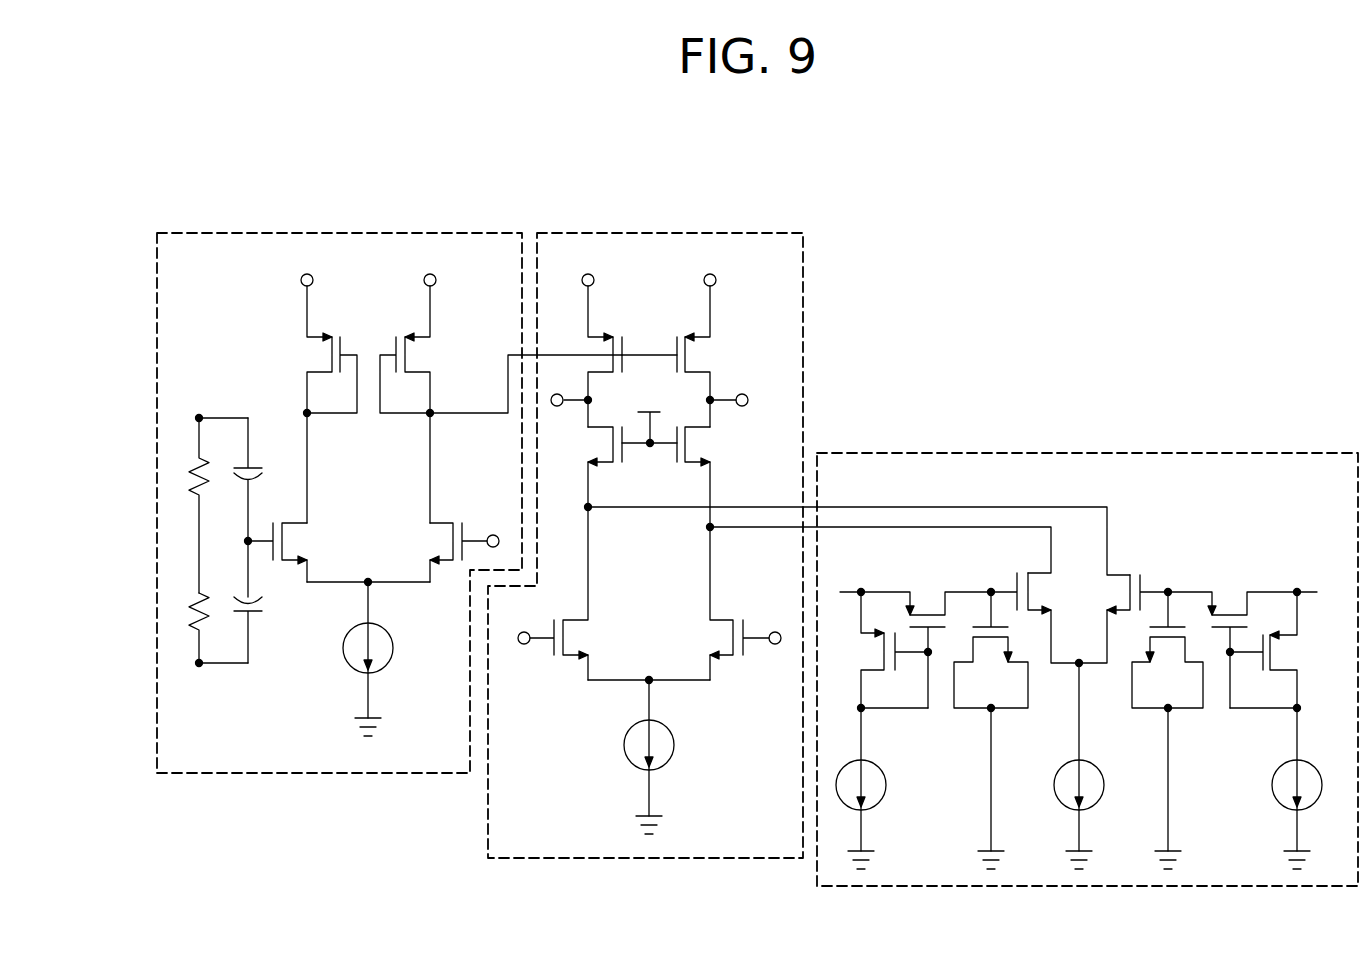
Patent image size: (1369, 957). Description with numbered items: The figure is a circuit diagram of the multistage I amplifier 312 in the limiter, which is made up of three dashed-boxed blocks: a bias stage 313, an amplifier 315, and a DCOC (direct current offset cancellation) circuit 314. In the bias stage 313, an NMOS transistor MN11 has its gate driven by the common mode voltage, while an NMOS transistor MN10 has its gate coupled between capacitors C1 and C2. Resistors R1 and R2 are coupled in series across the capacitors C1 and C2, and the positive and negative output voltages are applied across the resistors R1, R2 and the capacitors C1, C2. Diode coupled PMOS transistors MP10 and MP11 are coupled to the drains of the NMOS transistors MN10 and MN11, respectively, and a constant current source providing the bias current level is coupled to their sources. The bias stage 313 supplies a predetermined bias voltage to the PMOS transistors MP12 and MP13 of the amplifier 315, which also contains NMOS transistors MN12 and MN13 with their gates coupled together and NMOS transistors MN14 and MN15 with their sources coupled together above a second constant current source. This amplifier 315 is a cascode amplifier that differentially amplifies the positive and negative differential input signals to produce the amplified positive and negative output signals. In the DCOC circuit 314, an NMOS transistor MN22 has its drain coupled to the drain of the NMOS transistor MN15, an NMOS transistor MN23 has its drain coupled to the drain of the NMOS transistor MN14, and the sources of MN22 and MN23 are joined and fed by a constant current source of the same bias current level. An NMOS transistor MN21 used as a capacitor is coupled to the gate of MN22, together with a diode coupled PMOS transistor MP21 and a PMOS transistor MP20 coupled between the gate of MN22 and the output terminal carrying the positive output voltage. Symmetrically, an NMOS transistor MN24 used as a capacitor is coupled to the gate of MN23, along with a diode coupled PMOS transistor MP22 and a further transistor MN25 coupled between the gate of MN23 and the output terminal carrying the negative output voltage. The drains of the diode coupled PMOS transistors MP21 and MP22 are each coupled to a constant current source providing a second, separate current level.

The multistage I amplifier 312 is at (1031, 204).
The bias stage 313 is at (472, 231).
The DCOC circuit 314 is at (1188, 452).
The amplifier 315 is at (739, 231).
The PMOS transistor MP10 is at (315, 349).
The PMOS transistor MP11 is at (419, 349).
The NMOS transistor MN10 is at (294, 552).
The NMOS transistor MN11 is at (443, 552).
The resistor R1 is at (187, 505).
The resistor R2 is at (184, 628).
The capacitor C1 is at (263, 507).
The capacitor C2 is at (263, 630).
The PMOS transistor MP12 is at (613, 356).
The PMOS transistor MP13 is at (683, 356).
The NMOS transistor MN12 is at (588, 467).
The NMOS transistor MN13 is at (708, 477).
The NMOS transistor MN14 is at (575, 593).
The NMOS transistor MN15 is at (726, 603).
The PMOS transistor MP20 is at (926, 636).
The PMOS transistor MP21 is at (879, 721).
The PMOS transistor MP22 is at (1280, 721).
The NMOS transistor MN21 is at (991, 721).
The NMOS transistor MN22 is at (1035, 605).
The NMOS transistor MN23 is at (1123, 605).
The NMOS transistor MN24 is at (1167, 721).
The NMOS transistor MN25 is at (1242, 636).